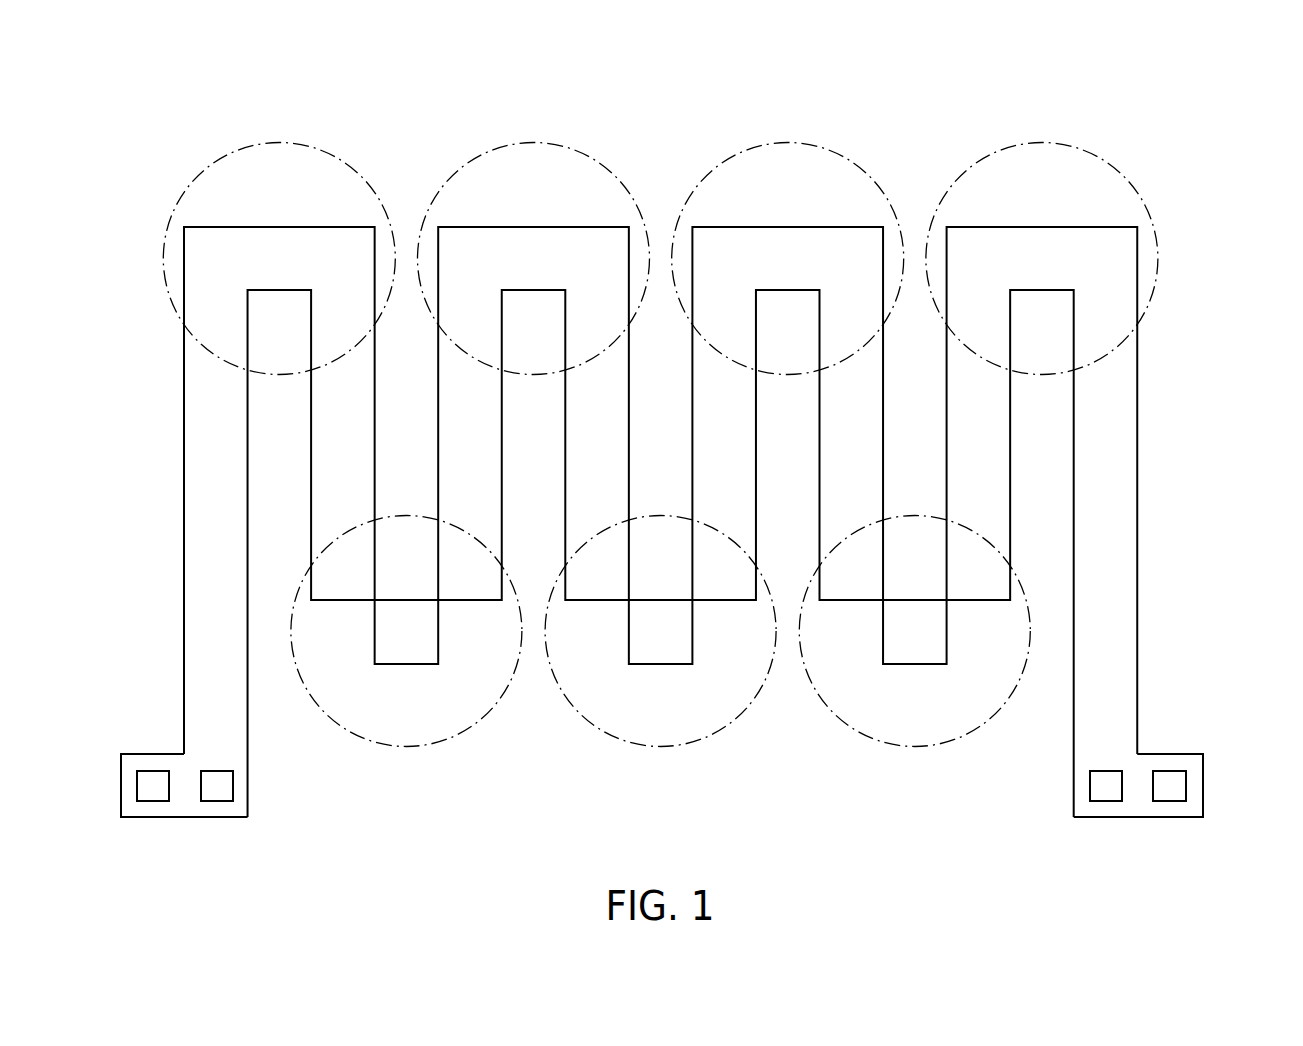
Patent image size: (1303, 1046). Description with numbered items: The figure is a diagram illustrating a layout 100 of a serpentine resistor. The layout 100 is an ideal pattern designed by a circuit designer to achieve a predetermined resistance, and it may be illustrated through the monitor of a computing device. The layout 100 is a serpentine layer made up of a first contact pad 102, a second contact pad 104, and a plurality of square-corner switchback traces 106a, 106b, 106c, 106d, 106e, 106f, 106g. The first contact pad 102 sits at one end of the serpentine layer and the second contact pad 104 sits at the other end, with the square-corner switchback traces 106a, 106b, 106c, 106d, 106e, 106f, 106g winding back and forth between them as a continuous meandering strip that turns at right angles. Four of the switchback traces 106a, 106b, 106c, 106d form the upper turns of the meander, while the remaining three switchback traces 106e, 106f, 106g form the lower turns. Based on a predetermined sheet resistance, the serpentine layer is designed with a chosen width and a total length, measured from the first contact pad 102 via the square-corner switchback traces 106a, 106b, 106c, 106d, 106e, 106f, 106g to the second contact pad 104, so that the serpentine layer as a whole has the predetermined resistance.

The layout 100 is at (700, 467).
The first contact pad 102 is at (216, 801).
The second contact pad 104 is at (1105, 801).
The square-corner switchback trace 106a is at (280, 143).
The square-corner switchback trace 106b is at (534, 143).
The square-corner switchback trace 106c is at (788, 143).
The square-corner switchback trace 106d is at (1042, 143).
The square-corner switchback trace 106e is at (408, 748).
The square-corner switchback trace 106f is at (662, 748).
The square-corner switchback trace 106g is at (916, 748).